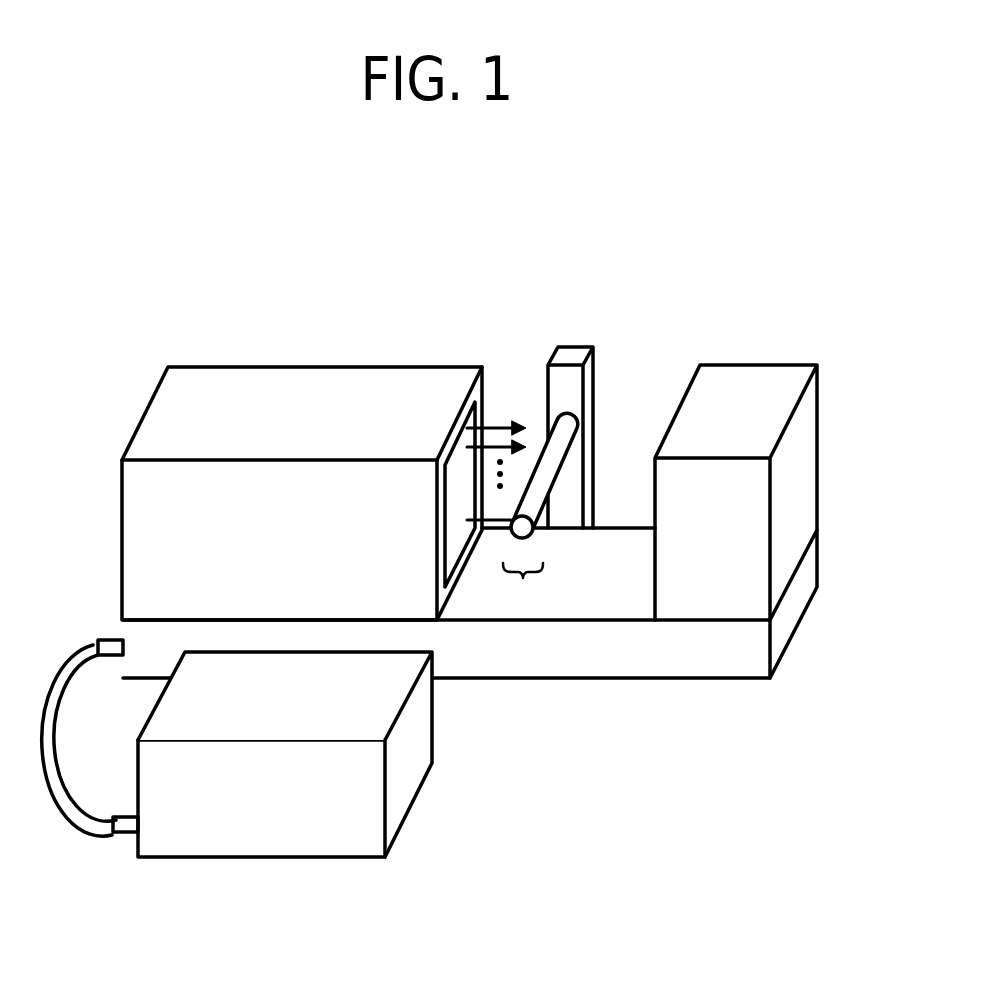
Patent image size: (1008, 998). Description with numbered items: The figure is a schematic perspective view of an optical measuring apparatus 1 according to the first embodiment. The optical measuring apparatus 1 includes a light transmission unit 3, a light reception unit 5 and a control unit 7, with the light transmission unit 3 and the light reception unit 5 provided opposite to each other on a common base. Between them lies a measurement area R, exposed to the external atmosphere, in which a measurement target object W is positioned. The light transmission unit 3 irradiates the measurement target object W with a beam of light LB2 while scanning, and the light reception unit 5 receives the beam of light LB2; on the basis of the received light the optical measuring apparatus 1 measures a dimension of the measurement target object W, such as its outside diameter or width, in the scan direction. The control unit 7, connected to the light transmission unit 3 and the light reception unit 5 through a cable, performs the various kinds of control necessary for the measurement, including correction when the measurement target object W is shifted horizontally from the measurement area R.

The optical measuring apparatus 1 is at (722, 235).
The light transmission unit 3 is at (121, 487).
The light reception unit 5 is at (818, 478).
The control unit 7 is at (433, 733).
The measurement target object W is at (532, 536).
The measurement area R is at (523, 594).
The beam of light LB2 is at (516, 426).